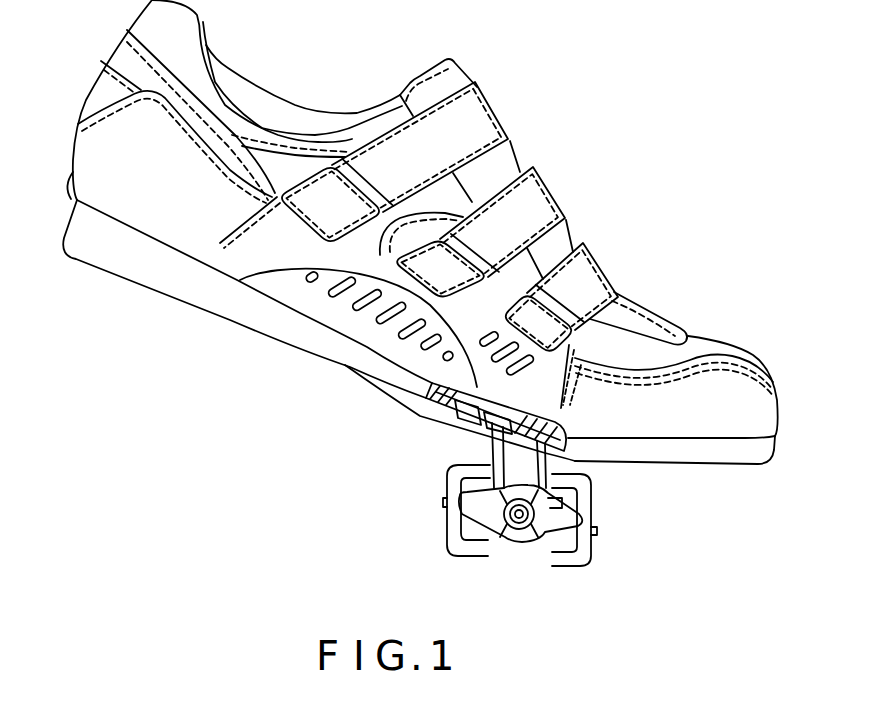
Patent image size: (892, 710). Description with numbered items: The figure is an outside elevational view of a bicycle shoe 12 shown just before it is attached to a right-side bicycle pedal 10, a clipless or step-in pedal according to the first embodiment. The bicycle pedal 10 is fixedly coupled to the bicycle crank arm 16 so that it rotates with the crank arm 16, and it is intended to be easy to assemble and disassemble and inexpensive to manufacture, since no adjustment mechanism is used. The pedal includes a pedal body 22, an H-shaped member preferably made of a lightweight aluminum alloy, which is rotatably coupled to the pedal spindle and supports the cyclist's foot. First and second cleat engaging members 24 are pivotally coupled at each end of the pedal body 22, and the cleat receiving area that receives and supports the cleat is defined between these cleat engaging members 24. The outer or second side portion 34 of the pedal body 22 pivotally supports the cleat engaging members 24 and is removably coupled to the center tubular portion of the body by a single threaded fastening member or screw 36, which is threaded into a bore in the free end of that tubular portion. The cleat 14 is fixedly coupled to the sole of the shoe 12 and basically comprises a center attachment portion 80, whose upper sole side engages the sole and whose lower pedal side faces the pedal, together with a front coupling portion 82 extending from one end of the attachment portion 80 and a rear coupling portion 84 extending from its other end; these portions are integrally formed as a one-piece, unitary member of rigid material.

The bicycle pedal 10 is at (502, 521).
The bicycle shoe 12 is at (680, 313).
The cleat 14 is at (512, 407).
The bicycle crank arm 16 is at (542, 455).
The pedal body 22 is at (543, 533).
The cleat engaging members 24 is at (447, 543).
The second side portion 34 is at (573, 517).
The screw 36 is at (519, 530).
The center attachment portion 80 is at (556, 401).
The front coupling portion 82 is at (558, 432).
The rear coupling portion 84 is at (460, 416).